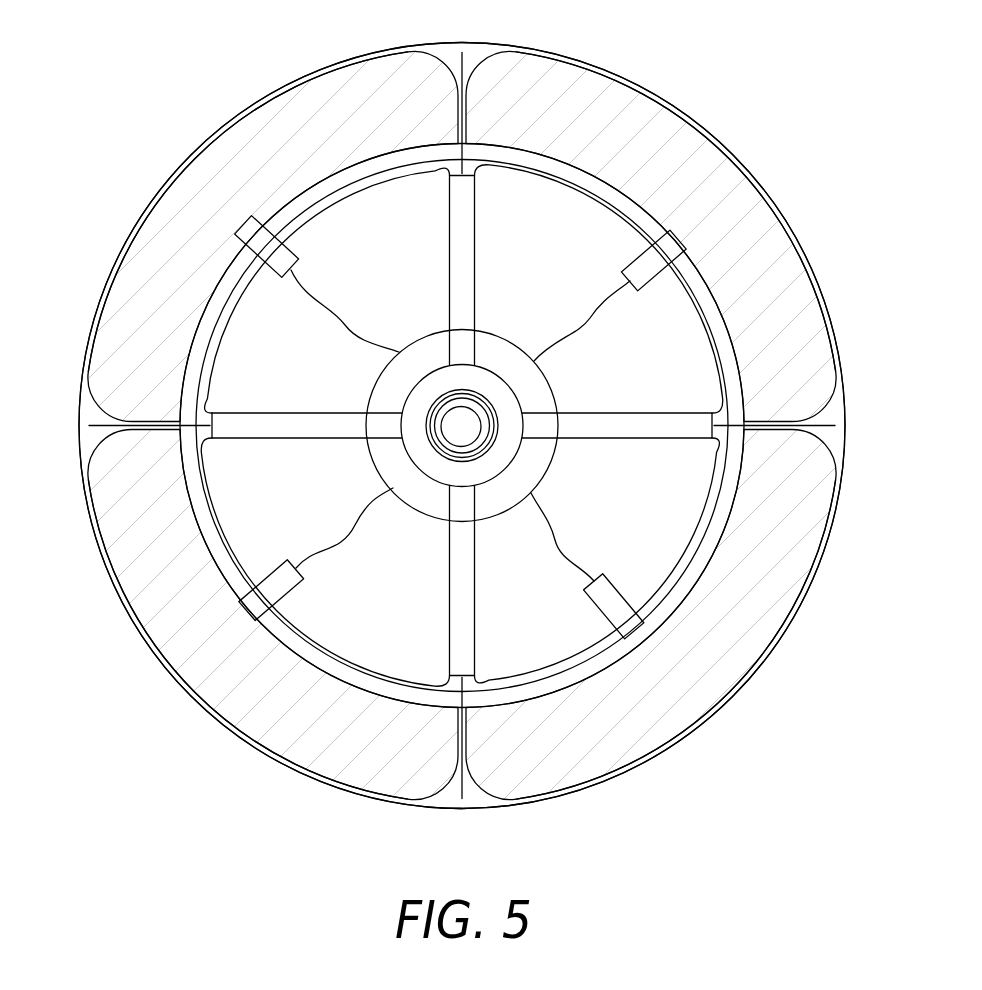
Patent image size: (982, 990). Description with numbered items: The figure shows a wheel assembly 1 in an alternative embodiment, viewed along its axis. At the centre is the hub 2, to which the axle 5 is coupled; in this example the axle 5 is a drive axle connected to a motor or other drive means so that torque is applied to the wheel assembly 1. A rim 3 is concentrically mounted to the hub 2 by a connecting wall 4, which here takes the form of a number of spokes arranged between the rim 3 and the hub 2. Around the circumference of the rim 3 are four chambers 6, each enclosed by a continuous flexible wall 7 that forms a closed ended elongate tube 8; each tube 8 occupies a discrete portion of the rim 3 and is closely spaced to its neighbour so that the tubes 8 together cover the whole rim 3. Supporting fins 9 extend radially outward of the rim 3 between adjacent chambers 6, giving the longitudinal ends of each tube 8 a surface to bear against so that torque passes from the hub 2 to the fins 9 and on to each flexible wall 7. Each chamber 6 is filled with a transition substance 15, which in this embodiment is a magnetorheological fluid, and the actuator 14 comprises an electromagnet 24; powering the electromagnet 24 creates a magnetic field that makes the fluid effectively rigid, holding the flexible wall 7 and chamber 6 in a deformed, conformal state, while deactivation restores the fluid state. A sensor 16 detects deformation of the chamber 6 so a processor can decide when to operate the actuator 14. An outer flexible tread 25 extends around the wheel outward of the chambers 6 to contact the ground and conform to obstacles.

The wheel assembly 1 is at (720, 56).
The hub 2 is at (377, 462).
The rim 3 is at (712, 350).
The connecting wall 4 is at (476, 248).
The axle 5 is at (468, 436).
The chamber 6 is at (343, 68).
The flexible wall 7 is at (627, 86).
The closed ended elongate tube 8 is at (617, 75).
The supporting fin 9 is at (468, 55).
The actuator 14 is at (332, 270).
The transition substance 15 is at (220, 168).
The sensor 16 is at (295, 238).
The electromagnet 24 is at (289, 285).
The outer flexible tread 25 is at (452, 808).